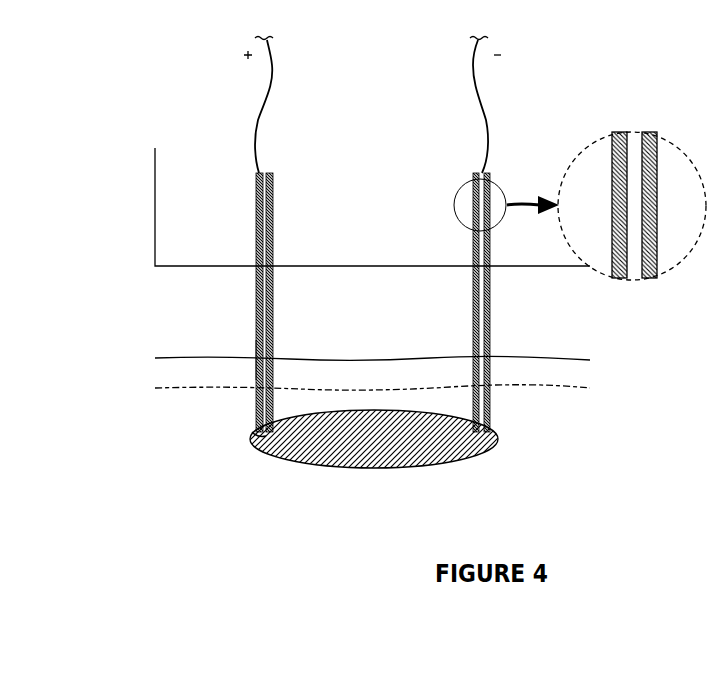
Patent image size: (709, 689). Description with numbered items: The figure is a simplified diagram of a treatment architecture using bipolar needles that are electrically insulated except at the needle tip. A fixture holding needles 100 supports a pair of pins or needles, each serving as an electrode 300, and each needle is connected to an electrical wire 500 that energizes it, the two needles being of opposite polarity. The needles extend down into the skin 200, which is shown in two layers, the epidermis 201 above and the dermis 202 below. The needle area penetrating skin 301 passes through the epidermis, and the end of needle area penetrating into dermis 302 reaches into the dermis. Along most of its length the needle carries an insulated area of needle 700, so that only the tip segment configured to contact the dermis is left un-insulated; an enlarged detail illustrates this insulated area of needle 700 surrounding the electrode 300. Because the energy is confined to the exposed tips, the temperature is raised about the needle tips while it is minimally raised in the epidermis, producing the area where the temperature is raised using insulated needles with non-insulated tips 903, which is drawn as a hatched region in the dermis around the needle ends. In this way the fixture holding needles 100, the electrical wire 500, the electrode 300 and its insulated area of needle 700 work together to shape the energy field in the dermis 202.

The fixture holding needles 100 is at (155, 205).
The skin 200 is at (321, 386).
The epidermis 201 is at (170, 375).
The dermis 202 is at (170, 408).
The pin/needle/electrode 300 is at (255, 293).
The needle area penetrating skin 301 is at (256, 378).
The end of needle area penetrating into dermis 302 is at (252, 437).
The electrical wire 500 is at (482, 103).
The insulated area of needle 700 is at (490, 335).
The area where the temperature is raised using insulated needles with non-insulated 903 is at (380, 455).